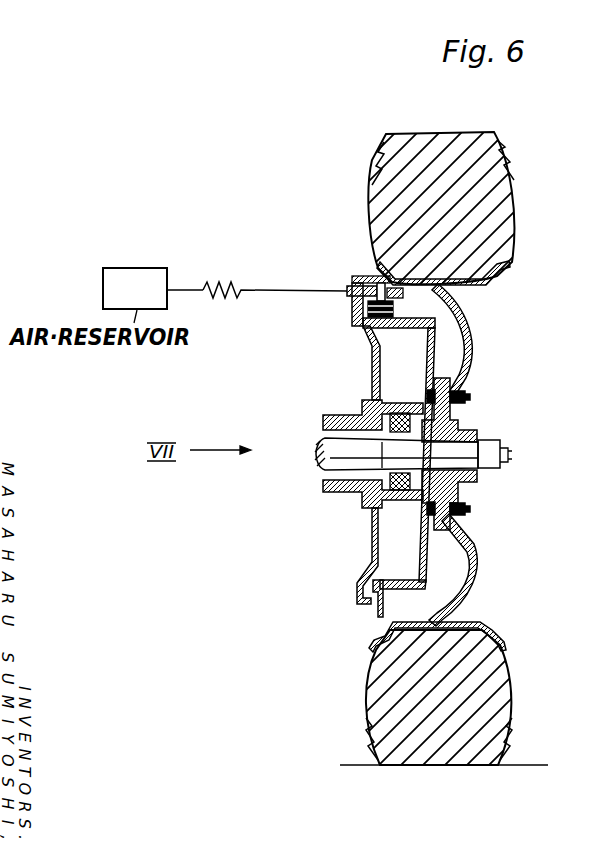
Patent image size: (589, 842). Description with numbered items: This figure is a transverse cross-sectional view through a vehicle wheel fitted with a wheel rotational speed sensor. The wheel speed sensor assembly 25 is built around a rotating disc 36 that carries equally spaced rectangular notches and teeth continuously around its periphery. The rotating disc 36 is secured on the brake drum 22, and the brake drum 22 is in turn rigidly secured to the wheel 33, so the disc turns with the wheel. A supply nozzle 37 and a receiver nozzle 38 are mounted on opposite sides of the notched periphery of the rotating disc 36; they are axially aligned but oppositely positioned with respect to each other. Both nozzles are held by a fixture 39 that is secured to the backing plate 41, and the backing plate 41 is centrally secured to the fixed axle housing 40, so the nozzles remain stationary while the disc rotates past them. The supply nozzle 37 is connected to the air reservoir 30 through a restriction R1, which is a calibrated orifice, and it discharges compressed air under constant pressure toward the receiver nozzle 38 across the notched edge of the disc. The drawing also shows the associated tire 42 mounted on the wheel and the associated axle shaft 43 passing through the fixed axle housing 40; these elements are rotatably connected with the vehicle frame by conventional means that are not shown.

The brake drum 22 is at (450, 541).
The wheel speed sensor assembly 25 is at (342, 300).
The air reservoir 30 is at (140, 276).
The wheel 33 is at (475, 568).
The rotating disc 36 is at (378, 612).
The supply nozzle 37 is at (354, 277).
The receiver nozzle 38 is at (403, 296).
The fixture 39 is at (352, 323).
The fixed axle housing 40 is at (328, 414).
The backing plate 41 is at (372, 535).
The tire 42 is at (490, 720).
The axle shaft 43 is at (322, 452).
The restriction R1 is at (228, 282).